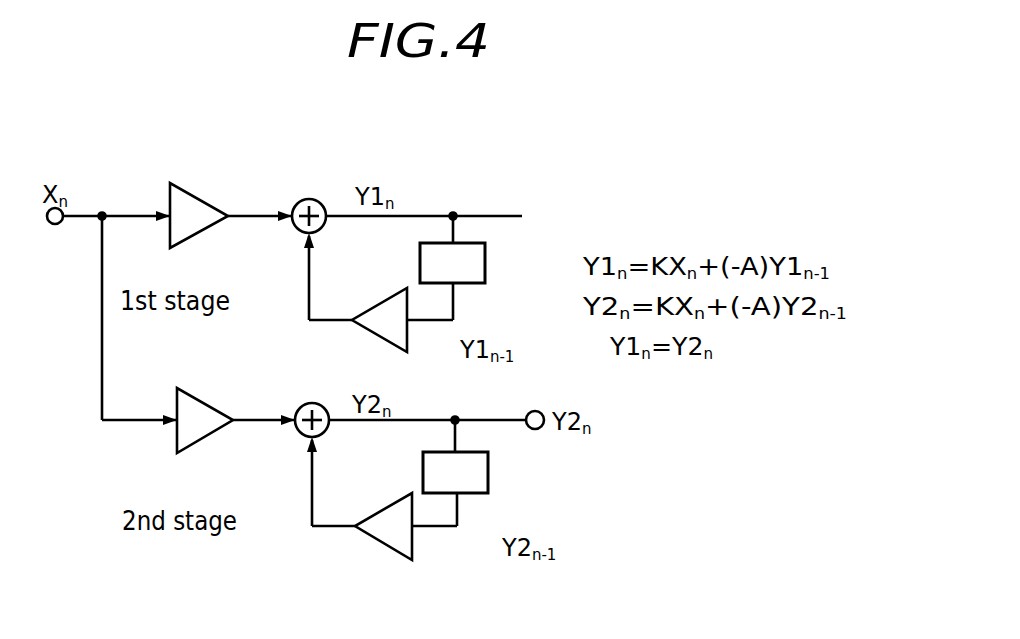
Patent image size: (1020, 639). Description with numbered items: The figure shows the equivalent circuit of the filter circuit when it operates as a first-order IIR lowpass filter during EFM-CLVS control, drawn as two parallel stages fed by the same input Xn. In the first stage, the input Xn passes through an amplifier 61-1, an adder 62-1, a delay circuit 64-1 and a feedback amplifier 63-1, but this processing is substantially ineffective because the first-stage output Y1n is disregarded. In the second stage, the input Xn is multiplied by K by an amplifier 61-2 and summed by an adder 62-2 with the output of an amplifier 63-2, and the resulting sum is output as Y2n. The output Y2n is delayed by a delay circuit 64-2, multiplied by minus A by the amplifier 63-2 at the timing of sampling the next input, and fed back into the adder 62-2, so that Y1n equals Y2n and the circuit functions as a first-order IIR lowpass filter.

The amplifier 61-1 is at (200, 190).
The adder 62-1 is at (313, 198).
The amplifier 63-1 is at (367, 297).
The delay circuit 64-1 is at (485, 265).
The amplifier 61-2 is at (195, 388).
The adder 62-2 is at (313, 403).
The amplifier 63-2 is at (378, 542).
The delay circuit 64-2 is at (488, 470).